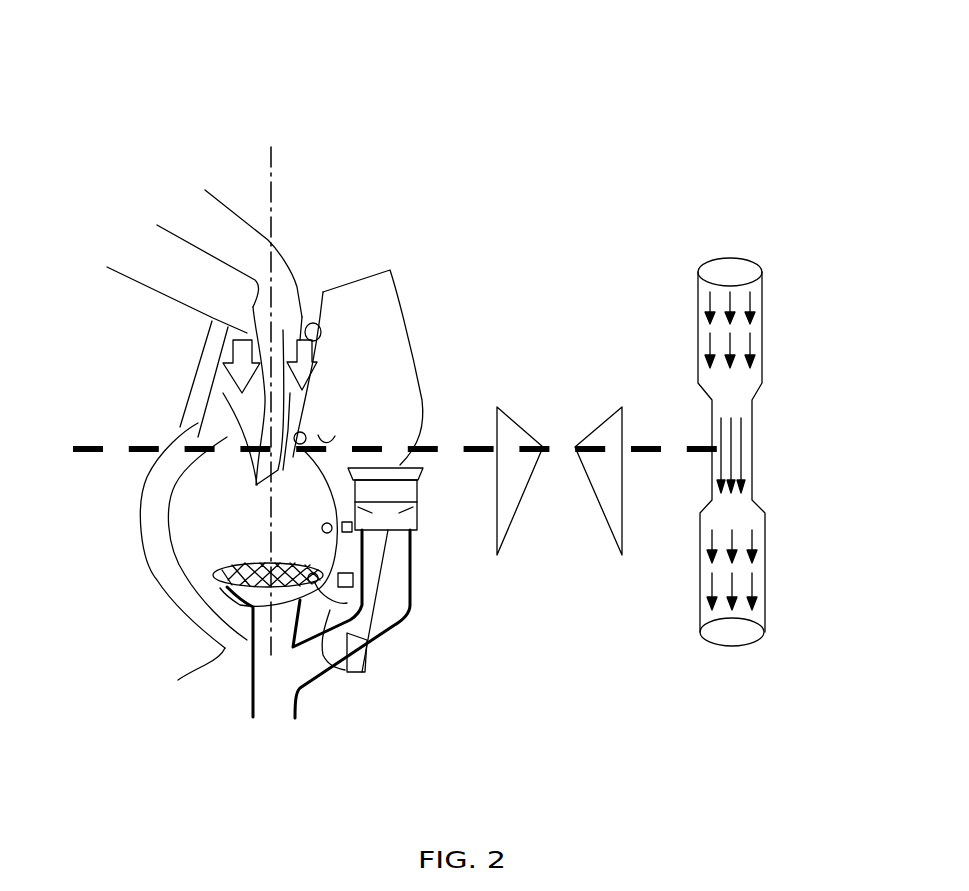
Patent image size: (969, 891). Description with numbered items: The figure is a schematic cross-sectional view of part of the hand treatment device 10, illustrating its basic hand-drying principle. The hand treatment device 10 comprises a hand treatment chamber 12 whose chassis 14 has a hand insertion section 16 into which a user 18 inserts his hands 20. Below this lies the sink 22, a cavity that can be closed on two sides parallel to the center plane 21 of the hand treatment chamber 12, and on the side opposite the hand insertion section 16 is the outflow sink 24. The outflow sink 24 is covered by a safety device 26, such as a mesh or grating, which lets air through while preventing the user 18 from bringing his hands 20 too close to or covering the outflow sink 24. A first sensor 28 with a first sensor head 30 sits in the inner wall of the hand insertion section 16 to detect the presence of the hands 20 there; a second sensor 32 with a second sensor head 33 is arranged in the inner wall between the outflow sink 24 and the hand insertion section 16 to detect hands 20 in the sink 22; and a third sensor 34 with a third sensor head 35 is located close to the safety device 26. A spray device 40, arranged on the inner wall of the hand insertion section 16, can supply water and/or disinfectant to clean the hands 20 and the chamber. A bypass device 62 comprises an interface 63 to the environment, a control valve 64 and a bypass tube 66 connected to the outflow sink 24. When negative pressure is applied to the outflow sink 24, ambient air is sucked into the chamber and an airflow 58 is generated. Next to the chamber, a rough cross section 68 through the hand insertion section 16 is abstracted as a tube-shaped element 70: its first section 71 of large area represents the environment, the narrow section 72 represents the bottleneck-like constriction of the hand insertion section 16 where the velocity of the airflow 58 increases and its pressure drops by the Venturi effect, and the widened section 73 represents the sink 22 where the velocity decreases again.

The hand treatment device 10 is at (454, 205).
The hand treatment chamber 12 is at (405, 286).
The chassis 14 is at (148, 557).
The hand insertion section 16 is at (331, 362).
The user 18 is at (153, 143).
The hands 20 is at (224, 227).
The center plane 21 is at (272, 182).
The sink 22 is at (197, 505).
The outflow sink 24 is at (222, 643).
The safety device 26 is at (213, 573).
The first sensor 28 is at (311, 463).
The first sensor head 30 is at (291, 467).
The second sensor 32 is at (352, 530).
The second sensor head 33 is at (333, 530).
The third sensor 34 is at (353, 580).
The third sensor head 35 is at (347, 590).
The spray device 40 is at (222, 415).
The airflow 58 is at (308, 322).
The bypass device 62 is at (428, 492).
The interface 63 is at (398, 463).
The control valve 64 is at (420, 516).
The bypass tube 66 is at (333, 667).
The cross section 68 is at (540, 420).
The tube-shaped element 70 is at (740, 260).
The first section 71 is at (763, 317).
The section 72 is at (752, 443).
The section 73 is at (753, 575).